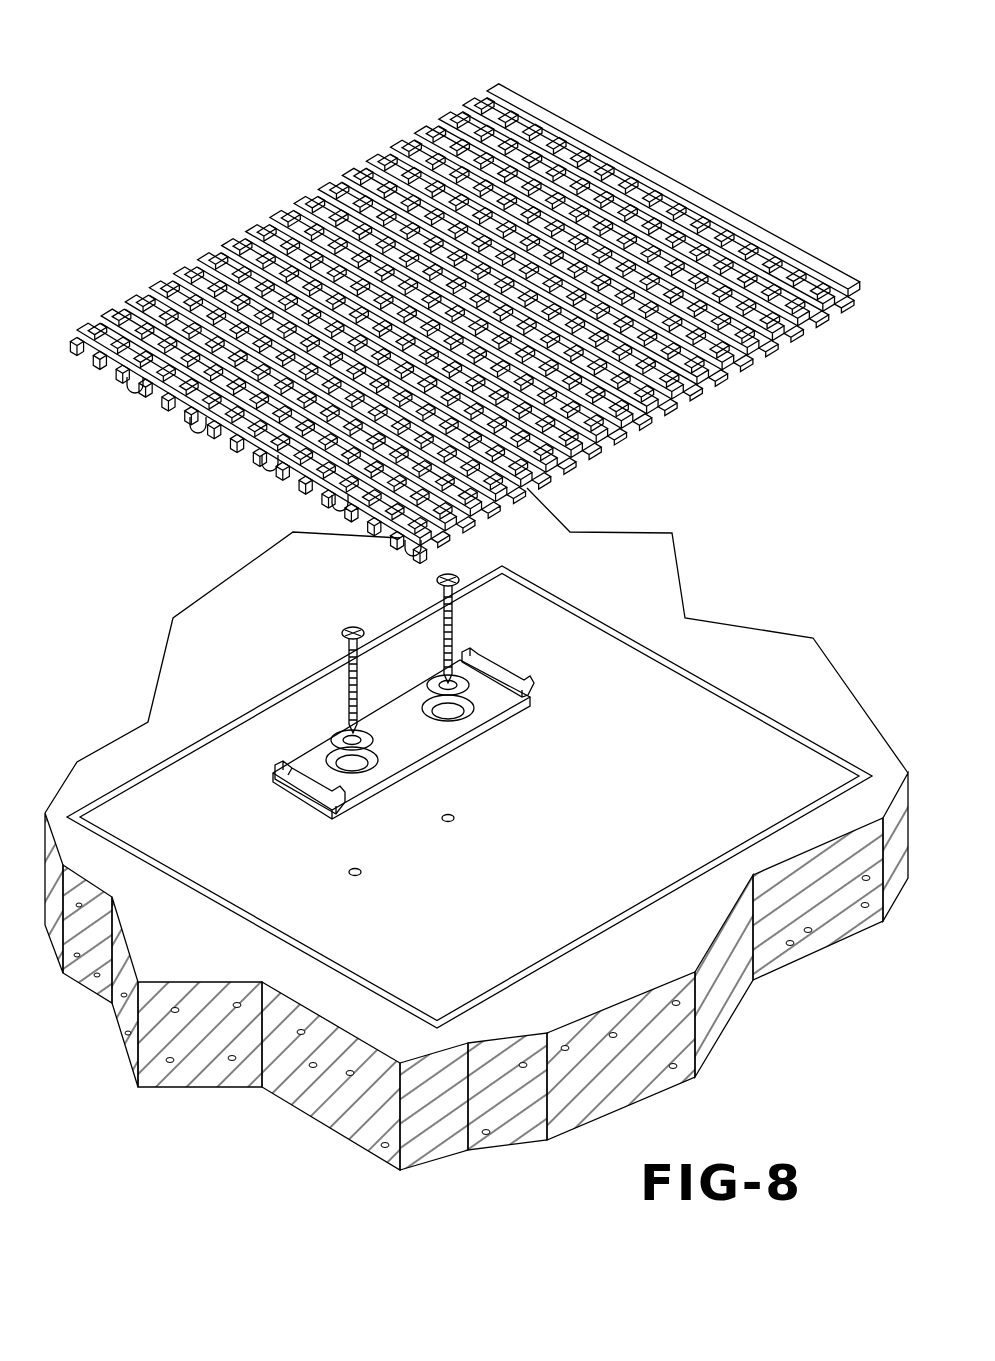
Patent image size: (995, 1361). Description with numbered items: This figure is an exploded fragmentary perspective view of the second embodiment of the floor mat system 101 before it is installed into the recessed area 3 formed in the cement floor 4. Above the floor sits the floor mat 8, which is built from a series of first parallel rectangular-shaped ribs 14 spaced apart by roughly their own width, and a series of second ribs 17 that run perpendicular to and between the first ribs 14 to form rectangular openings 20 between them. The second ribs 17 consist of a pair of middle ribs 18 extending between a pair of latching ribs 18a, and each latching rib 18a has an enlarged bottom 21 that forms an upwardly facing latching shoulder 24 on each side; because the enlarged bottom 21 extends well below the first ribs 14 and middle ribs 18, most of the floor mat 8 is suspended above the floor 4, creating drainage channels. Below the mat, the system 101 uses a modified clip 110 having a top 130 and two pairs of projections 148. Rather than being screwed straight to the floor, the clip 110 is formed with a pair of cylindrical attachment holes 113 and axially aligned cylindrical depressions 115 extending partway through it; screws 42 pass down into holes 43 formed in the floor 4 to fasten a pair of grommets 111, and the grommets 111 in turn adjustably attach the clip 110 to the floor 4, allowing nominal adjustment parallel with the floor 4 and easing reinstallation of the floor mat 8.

The floor mat system 101 is at (690, 128).
The floor mat 8 is at (730, 190).
The second ribs 17 is at (785, 225).
The first ribs 14 is at (490, 88).
The middle ribs 18 is at (295, 240).
The rectangular openings 20 is at (555, 128).
The latching ribs 18a is at (445, 185).
The enlarged bottom 21 is at (185, 428).
The latching shoulder 24 is at (195, 422).
The floor 4 is at (665, 590).
The recessed area 3 is at (680, 725).
The clip 110 is at (485, 757).
The top 130 is at (495, 708).
The attachment holes 113 is at (345, 768).
The cylindrical depressions 115 is at (328, 758).
The grommets 111 is at (438, 680).
The screw 42 is at (453, 575).
The projections 148 is at (470, 665).
The hole 43 is at (450, 825).